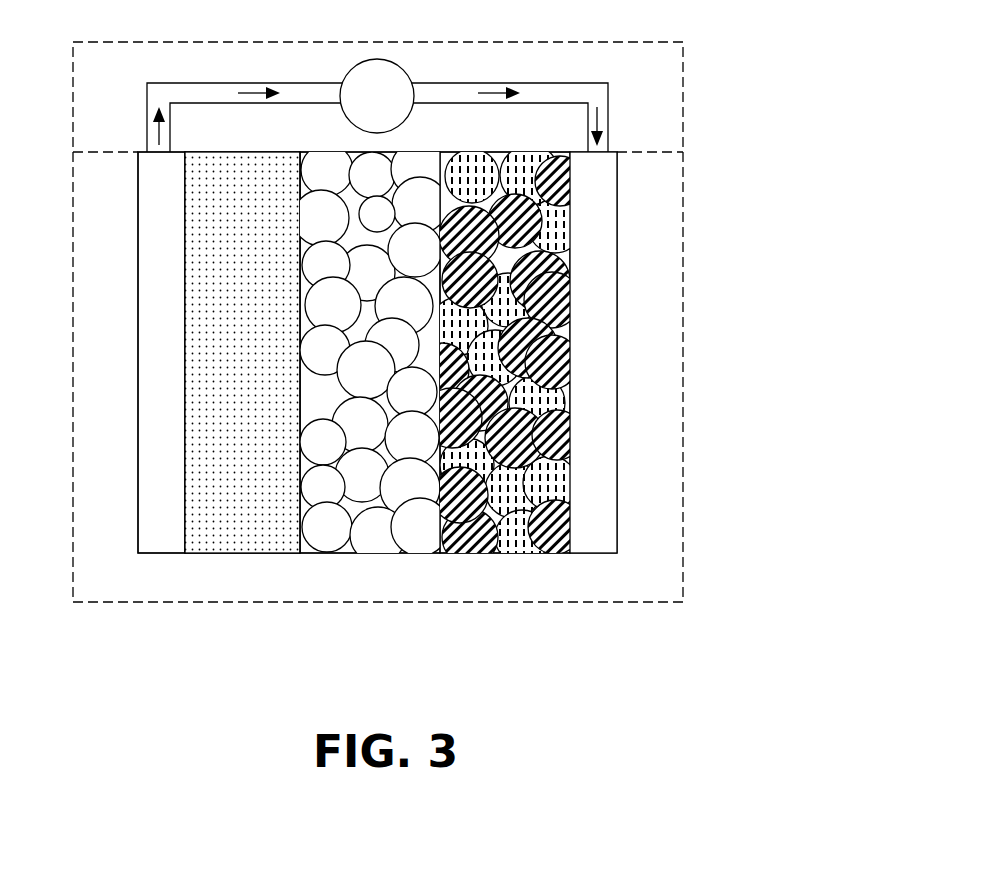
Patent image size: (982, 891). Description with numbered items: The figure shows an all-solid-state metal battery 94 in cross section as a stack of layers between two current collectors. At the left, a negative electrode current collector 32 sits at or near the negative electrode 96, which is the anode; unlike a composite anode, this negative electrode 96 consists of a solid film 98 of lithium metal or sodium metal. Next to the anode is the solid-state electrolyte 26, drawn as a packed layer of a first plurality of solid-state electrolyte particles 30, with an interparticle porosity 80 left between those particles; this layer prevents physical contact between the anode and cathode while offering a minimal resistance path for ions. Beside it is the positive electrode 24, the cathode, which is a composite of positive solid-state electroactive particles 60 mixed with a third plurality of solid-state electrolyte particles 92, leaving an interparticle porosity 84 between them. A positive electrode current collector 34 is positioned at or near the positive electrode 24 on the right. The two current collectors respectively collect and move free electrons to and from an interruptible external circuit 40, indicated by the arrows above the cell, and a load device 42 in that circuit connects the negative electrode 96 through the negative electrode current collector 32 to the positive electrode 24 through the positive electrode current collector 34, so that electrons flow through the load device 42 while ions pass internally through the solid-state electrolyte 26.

The positive electrode 24 is at (502, 568).
The solid-state electrolyte 26 is at (379, 568).
The first plurality of solid-state electrolyte particles 30 is at (386, 540).
The negative electrode current collector 32 is at (150, 497).
The positive electrode current collector 34 is at (605, 215).
The external circuit 40 is at (705, 107).
The load device 42 is at (377, 96).
The positive solid-state electroactive particles 60 is at (570, 350).
The interparticle porosity 80 is at (443, 158).
The interparticle porosity 84 is at (487, 515).
The third plurality of solid-state electrolyte particles 92 is at (562, 483).
The all-solid-state metal battery 94 is at (705, 228).
The negative electrode 96 is at (249, 568).
The solid film 98 is at (200, 252).